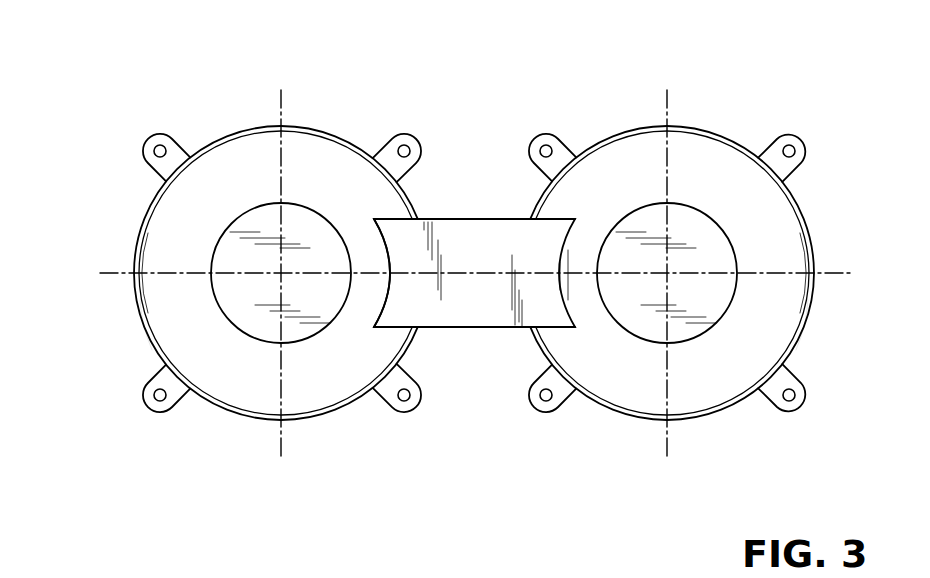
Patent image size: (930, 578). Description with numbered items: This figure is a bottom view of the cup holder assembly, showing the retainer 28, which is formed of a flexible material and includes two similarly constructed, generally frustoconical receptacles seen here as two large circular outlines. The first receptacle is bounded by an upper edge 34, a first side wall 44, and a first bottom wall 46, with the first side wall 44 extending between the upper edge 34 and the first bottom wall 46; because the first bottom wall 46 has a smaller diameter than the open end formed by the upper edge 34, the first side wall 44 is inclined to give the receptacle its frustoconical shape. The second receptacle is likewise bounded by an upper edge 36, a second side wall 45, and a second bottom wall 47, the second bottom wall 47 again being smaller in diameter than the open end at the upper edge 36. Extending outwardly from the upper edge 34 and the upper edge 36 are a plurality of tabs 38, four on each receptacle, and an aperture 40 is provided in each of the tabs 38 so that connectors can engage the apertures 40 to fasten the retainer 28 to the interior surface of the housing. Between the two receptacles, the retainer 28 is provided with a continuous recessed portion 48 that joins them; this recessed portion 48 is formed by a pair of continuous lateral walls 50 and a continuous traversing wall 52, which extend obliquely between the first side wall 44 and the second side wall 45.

The retainer 28 is at (230, 108).
The upper edge 34 is at (143, 222).
The upper edge 36 is at (806, 222).
The tabs 38 is at (143, 168).
The aperture 40 is at (164, 149).
The first side wall 44 is at (157, 348).
The second side wall 45 is at (780, 328).
The first bottom wall 46 is at (240, 252).
The second bottom wall 47 is at (715, 312).
The continuous recessed portion 48 is at (457, 198).
The continuous lateral walls 50 is at (490, 219).
The continuous traversing wall 52 is at (473, 305).